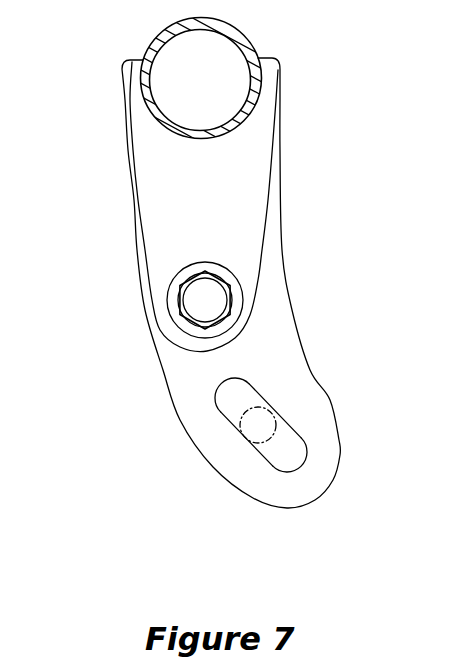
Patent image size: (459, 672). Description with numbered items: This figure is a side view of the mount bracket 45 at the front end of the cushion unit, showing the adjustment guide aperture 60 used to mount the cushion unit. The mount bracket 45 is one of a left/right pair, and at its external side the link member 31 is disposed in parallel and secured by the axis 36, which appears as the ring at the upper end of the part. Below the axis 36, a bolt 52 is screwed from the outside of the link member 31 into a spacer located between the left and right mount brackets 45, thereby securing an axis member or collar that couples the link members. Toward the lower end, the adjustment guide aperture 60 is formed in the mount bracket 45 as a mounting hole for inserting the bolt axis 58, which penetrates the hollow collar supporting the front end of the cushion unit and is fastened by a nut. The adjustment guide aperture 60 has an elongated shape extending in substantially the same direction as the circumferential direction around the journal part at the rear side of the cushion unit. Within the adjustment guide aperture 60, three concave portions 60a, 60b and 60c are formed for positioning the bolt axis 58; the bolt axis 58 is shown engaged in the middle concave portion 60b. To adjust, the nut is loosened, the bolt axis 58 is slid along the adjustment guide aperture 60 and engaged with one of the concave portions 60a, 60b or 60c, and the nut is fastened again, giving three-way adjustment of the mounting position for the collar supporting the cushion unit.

The link member 31 is at (152, 182).
The axis 36 is at (144, 51).
The mount bracket 45 is at (277, 293).
The bolt 52 is at (195, 300).
The bolt axis 58 is at (272, 408).
The adjustment guide aperture 60 is at (265, 475).
The concave portion 60a is at (222, 404).
The concave portion 60b is at (247, 445).
The concave portion 60c is at (277, 471).